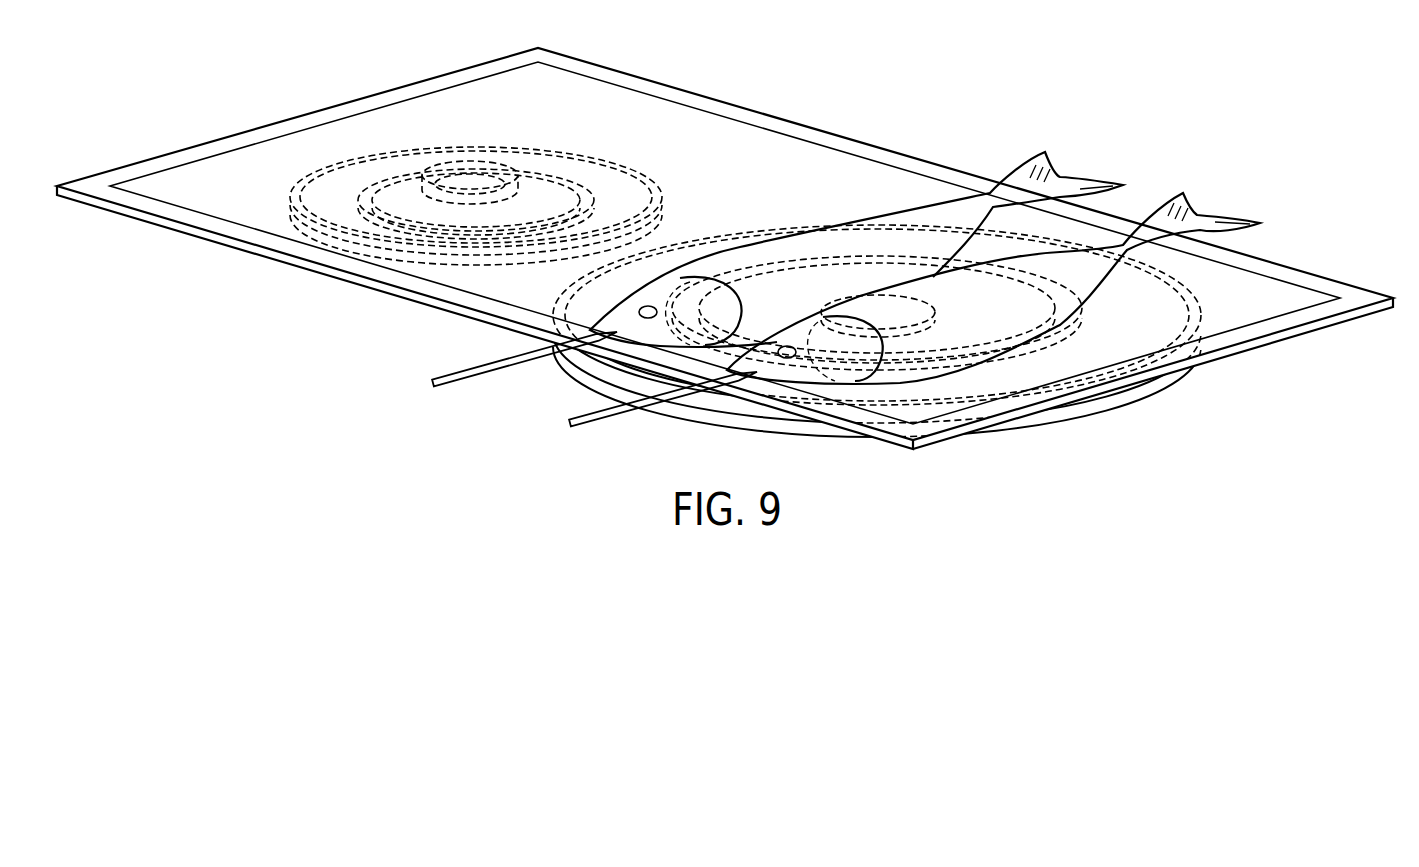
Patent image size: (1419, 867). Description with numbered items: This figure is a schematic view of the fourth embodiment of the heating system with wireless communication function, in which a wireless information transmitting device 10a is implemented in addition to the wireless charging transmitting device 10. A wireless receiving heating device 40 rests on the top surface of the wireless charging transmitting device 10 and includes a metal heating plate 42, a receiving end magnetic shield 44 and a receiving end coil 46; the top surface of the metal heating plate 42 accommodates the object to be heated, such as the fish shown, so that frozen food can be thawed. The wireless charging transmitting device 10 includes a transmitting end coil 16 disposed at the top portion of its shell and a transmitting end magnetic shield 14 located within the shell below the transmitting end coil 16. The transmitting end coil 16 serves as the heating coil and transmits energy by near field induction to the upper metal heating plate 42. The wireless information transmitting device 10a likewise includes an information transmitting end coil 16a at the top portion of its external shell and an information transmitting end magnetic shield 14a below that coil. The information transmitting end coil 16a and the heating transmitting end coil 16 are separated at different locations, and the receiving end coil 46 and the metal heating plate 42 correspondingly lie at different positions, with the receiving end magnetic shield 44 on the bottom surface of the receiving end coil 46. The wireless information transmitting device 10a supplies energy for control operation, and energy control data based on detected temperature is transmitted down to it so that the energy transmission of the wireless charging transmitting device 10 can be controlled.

The wireless charging transmitting device 10 is at (1096, 424).
The transmitting end magnetic shield 14 is at (1061, 336).
The transmitting end coil 16 is at (1044, 313).
The wireless receiving heating device 40 is at (876, 137).
The metal heating plate 42 is at (780, 148).
The wireless information transmitting device 10a is at (305, 238).
The information transmitting end magnetic shield 14a is at (357, 200).
The information transmitting end coil 16a is at (390, 227).
The receiving end magnetic shield 44 is at (445, 157).
The receiving end coil 46 is at (438, 172).